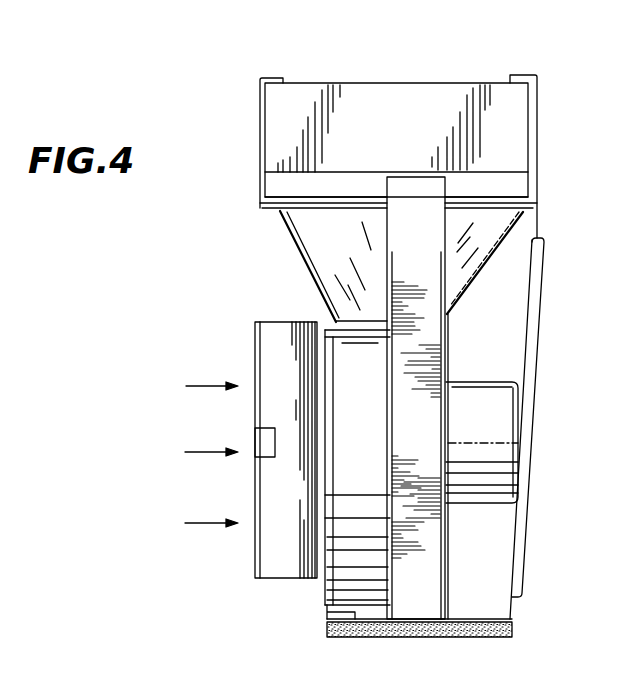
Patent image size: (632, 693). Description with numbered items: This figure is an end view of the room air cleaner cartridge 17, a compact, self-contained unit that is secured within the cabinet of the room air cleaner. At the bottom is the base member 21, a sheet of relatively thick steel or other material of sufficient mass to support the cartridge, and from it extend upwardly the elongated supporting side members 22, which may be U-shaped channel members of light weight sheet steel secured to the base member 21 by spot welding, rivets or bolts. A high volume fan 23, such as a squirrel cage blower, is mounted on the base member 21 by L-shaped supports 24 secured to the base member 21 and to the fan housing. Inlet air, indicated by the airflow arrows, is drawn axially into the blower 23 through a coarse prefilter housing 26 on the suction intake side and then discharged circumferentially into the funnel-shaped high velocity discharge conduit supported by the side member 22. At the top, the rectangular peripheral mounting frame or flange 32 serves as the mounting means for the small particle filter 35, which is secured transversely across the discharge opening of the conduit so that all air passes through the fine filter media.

The room air cleaner cartridge 17 is at (222, 228).
The small particle filter 35 is at (425, 97).
The mounting frame or flange 32 is at (518, 183).
The elongated supporting side member 22 is at (428, 367).
The high volume fan 23 is at (369, 427).
The coarse prefilter housing 26 is at (275, 337).
The L-shaped support 24 is at (330, 614).
The base member 21 is at (470, 613).